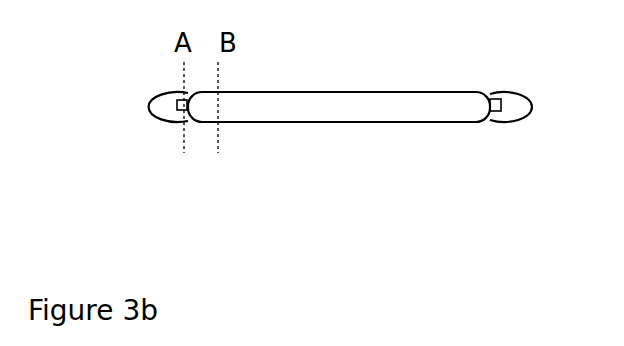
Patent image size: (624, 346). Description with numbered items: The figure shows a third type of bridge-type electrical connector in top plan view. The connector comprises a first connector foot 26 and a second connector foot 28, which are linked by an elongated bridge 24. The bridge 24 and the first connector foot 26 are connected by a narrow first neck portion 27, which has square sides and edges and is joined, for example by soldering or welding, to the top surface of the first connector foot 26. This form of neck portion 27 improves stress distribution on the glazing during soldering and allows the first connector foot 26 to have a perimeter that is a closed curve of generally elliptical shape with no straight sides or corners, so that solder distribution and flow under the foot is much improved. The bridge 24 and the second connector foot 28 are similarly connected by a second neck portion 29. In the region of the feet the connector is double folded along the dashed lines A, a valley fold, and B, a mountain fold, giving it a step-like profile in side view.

The bridge 24 is at (400, 92).
The first connector foot 26 is at (142, 94).
The first neck portion 27 is at (185, 112).
The second connector foot 28 is at (542, 95).
The second neck portion 29 is at (493, 99).